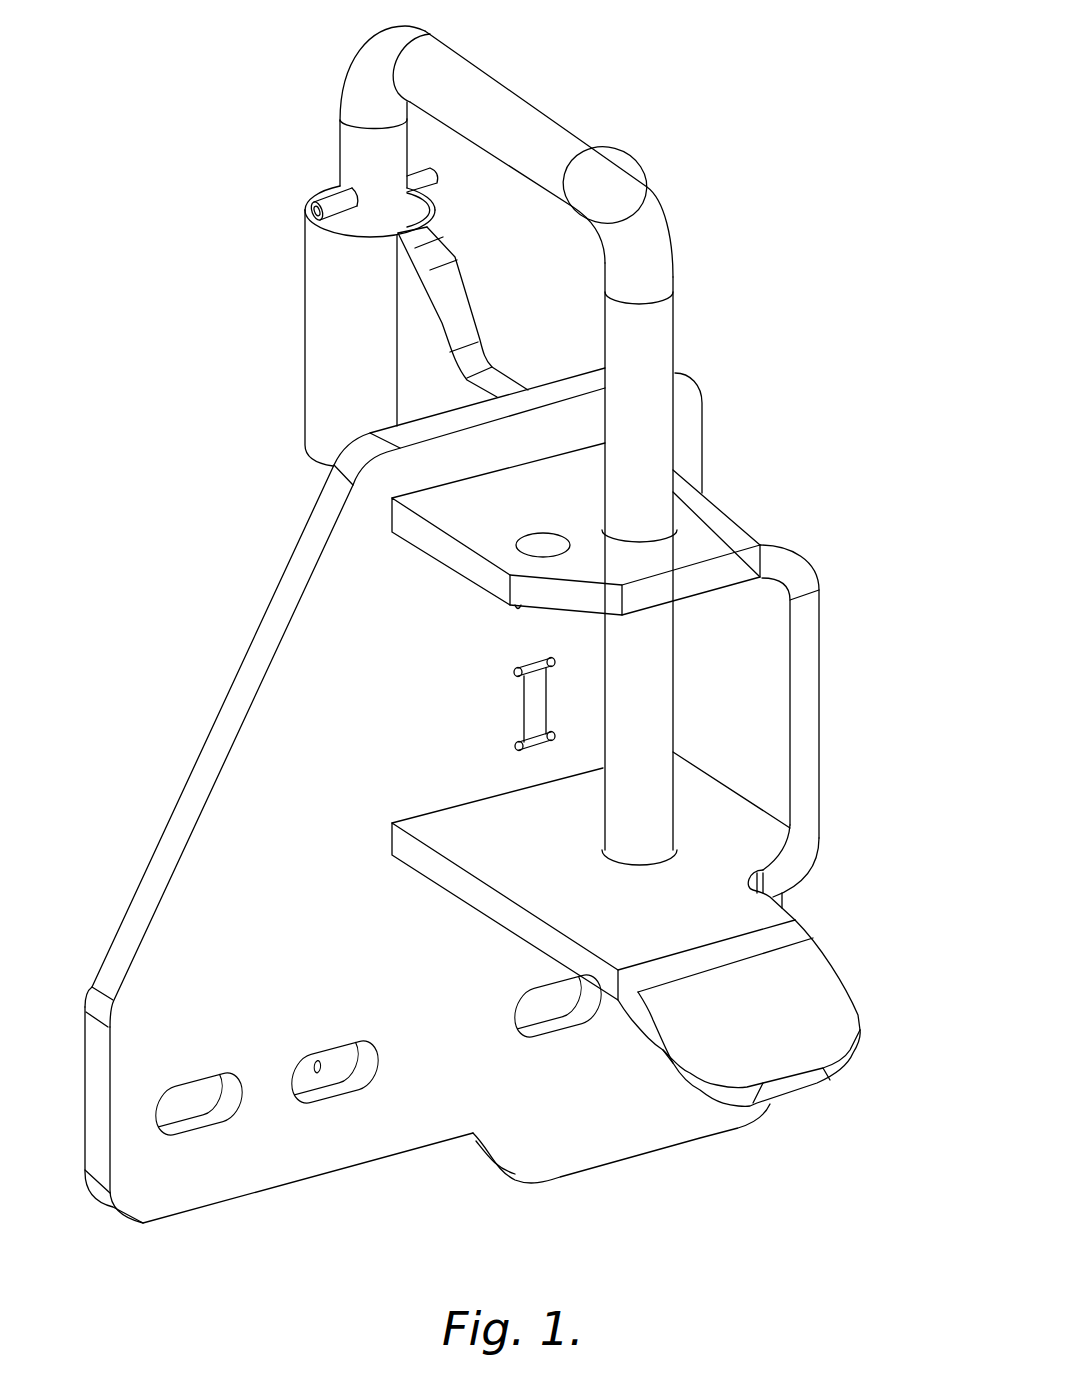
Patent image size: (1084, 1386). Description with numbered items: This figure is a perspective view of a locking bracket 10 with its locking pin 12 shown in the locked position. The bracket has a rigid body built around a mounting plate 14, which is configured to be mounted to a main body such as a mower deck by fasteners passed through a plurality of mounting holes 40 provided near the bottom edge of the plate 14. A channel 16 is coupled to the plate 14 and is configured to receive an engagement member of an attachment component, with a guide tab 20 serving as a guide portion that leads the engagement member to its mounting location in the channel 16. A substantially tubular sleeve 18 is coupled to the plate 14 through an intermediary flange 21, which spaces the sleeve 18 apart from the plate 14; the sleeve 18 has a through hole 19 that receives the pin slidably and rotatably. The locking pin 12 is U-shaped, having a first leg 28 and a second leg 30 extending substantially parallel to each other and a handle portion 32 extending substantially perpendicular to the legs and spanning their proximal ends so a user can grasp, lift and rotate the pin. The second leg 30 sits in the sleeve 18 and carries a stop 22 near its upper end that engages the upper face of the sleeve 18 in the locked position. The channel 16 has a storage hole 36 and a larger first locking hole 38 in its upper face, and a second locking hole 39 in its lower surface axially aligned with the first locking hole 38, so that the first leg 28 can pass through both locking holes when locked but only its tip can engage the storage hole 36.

The locking bracket 10 is at (316, 377).
The locking pin 12 is at (541, 154).
The mounting plate 14 is at (427, 795).
The channel 16 is at (834, 732).
The sleeve 18 is at (316, 326).
The through hole 19 is at (464, 210).
The guide tab 20 is at (772, 1013).
The intermediary flange 21 is at (375, 319).
The stop 22 is at (286, 197).
The first leg 28 is at (690, 564).
The second leg 30 is at (322, 140).
The handle portion 32 is at (440, 60).
The storage hole 36 is at (562, 529).
The first locking hole 38 is at (716, 523).
The second locking hole 39 is at (639, 876).
The mounting holes 40 is at (378, 1064).